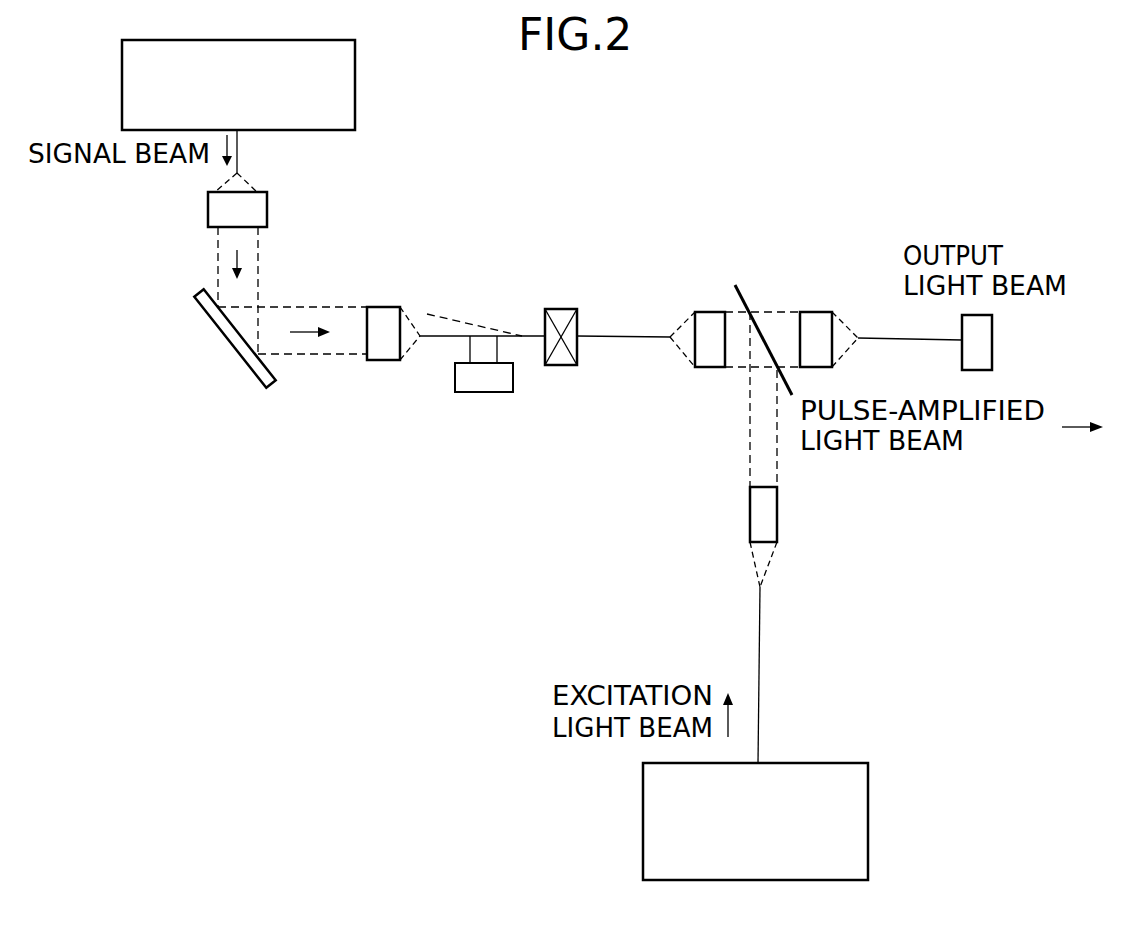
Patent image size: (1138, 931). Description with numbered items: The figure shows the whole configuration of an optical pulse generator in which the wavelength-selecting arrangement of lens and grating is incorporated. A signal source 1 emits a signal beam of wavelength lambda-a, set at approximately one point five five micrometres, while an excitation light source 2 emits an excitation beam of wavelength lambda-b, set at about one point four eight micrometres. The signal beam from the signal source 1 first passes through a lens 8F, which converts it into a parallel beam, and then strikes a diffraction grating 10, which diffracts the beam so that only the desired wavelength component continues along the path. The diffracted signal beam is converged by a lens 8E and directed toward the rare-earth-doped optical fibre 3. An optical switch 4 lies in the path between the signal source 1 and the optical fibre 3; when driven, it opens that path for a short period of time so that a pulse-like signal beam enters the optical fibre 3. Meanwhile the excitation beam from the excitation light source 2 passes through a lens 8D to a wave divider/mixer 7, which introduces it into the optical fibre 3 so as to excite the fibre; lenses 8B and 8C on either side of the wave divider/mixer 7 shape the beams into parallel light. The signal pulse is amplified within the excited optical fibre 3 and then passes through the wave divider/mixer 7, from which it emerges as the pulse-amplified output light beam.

The signal source 1 is at (358, 87).
The excitation light source 2 is at (868, 807).
The optical fibre 3 is at (618, 340).
The optical switch 4 is at (587, 272).
The wave divider/mixer 7 is at (745, 300).
The lens 8B is at (707, 310).
The lens 8C is at (818, 310).
The lens 8D is at (777, 512).
The lens 8E is at (387, 362).
The lens 8F is at (267, 210).
The diffraction grating 10 is at (260, 387).